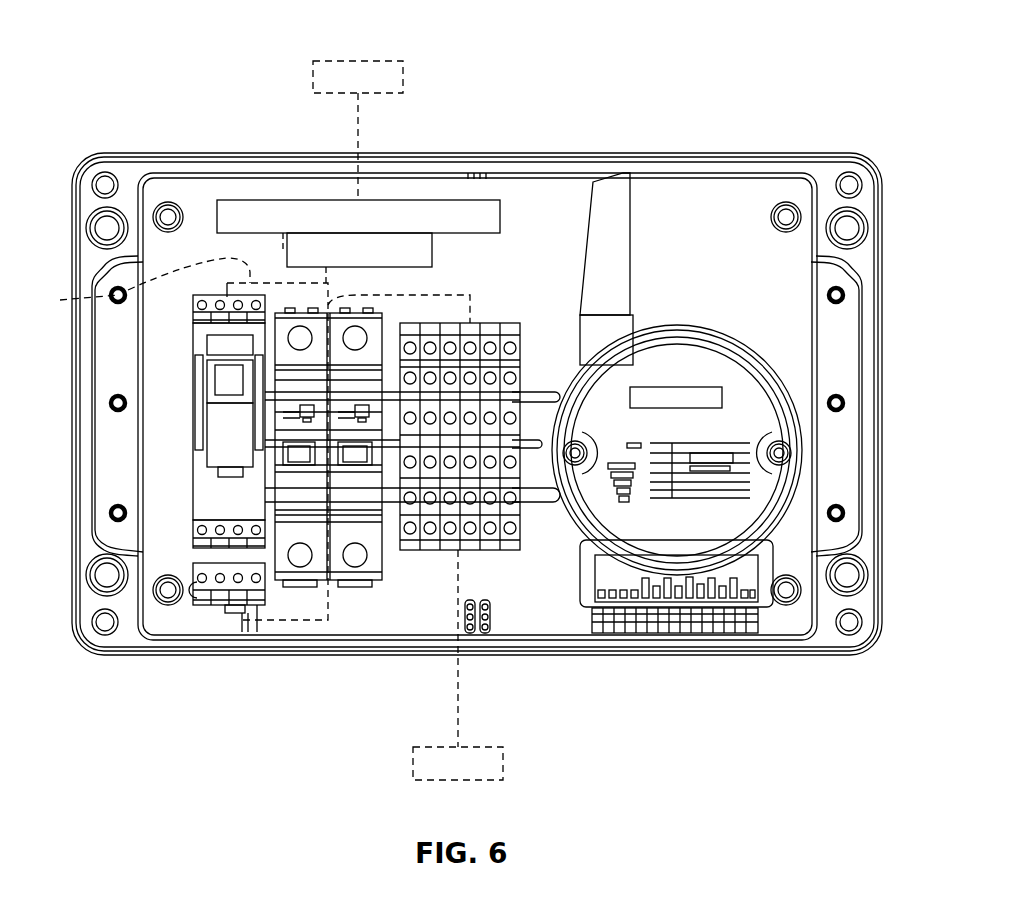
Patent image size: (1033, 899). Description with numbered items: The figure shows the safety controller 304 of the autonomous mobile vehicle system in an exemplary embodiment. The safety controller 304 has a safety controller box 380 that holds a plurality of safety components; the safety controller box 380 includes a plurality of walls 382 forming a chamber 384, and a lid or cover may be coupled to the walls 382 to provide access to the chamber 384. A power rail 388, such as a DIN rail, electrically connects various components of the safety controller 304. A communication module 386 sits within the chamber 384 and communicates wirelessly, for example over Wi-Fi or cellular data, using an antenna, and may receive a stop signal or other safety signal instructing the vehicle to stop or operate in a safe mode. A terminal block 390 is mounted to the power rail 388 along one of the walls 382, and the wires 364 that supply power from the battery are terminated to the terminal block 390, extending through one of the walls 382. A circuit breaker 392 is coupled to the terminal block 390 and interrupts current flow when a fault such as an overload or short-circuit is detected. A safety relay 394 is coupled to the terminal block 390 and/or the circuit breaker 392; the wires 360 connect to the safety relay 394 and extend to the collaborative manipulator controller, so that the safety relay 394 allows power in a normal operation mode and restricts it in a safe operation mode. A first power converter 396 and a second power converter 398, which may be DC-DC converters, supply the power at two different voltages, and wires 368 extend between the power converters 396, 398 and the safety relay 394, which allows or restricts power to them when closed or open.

The safety controller 304 is at (594, 118).
The wires 360 is at (362, 137).
The wires 364 is at (461, 685).
The wires 368 is at (241, 439).
The safety controller box 380 is at (142, 653).
The walls 382 is at (70, 452).
The chamber 384 is at (727, 226).
The communication module 386 is at (778, 358).
The power rail 388 is at (537, 480).
The terminal block 390 is at (420, 555).
The circuit breaker 392 is at (347, 590).
The safety relay 394 is at (207, 603).
The first power converter 396 is at (290, 252).
The second power converter 398 is at (238, 200).